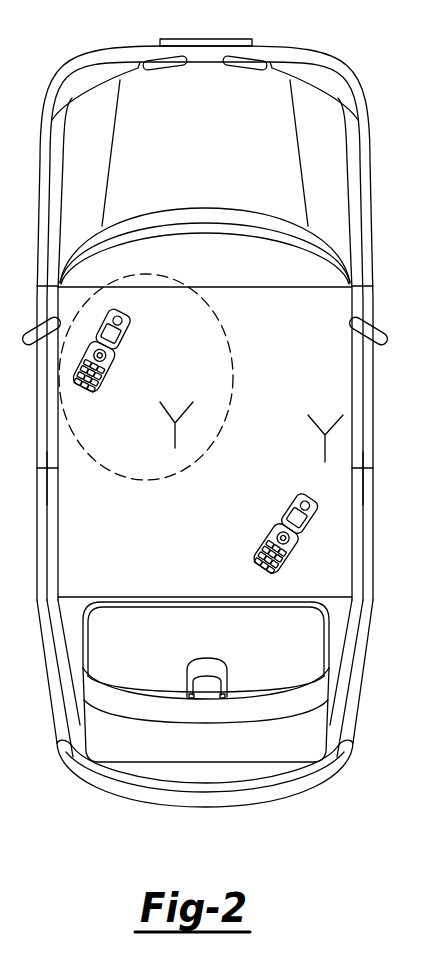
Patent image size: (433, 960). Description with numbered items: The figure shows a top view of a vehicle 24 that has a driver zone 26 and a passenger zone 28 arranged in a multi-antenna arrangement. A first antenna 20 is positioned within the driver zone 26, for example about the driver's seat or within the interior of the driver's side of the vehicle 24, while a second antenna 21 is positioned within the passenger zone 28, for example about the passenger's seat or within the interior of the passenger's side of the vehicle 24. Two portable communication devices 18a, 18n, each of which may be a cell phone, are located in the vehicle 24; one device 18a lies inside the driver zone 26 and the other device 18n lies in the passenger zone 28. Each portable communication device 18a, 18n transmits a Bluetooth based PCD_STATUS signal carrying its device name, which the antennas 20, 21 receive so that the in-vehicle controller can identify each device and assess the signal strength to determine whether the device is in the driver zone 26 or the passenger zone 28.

The vehicle 24 is at (333, 70).
The portable communication device 18a is at (118, 371).
The portable communication device 18n is at (285, 563).
The first antenna 20 is at (175, 435).
The second antenna 21 is at (325, 449).
The driver zone 26 is at (233, 372).
The passenger zone 28 is at (215, 512).